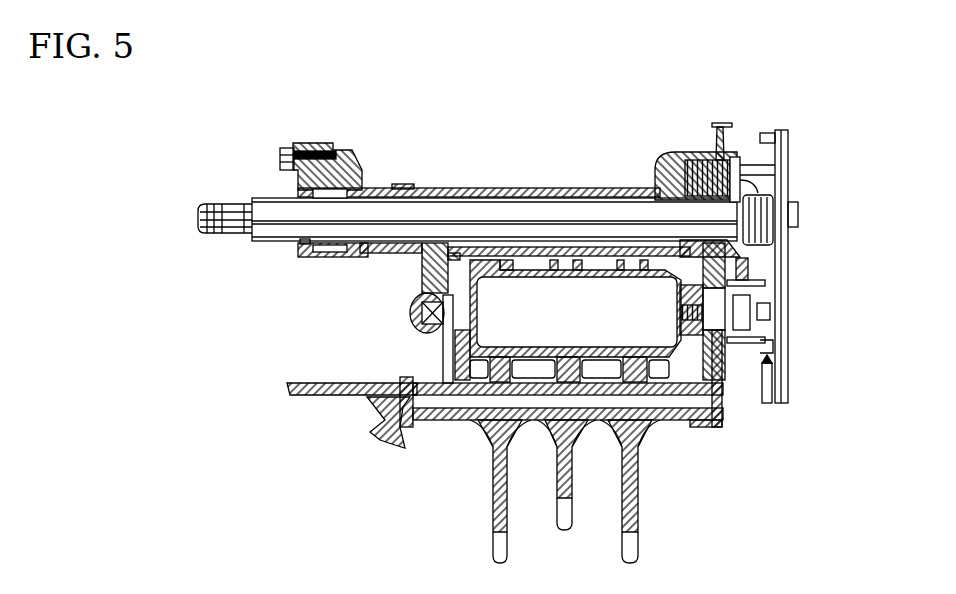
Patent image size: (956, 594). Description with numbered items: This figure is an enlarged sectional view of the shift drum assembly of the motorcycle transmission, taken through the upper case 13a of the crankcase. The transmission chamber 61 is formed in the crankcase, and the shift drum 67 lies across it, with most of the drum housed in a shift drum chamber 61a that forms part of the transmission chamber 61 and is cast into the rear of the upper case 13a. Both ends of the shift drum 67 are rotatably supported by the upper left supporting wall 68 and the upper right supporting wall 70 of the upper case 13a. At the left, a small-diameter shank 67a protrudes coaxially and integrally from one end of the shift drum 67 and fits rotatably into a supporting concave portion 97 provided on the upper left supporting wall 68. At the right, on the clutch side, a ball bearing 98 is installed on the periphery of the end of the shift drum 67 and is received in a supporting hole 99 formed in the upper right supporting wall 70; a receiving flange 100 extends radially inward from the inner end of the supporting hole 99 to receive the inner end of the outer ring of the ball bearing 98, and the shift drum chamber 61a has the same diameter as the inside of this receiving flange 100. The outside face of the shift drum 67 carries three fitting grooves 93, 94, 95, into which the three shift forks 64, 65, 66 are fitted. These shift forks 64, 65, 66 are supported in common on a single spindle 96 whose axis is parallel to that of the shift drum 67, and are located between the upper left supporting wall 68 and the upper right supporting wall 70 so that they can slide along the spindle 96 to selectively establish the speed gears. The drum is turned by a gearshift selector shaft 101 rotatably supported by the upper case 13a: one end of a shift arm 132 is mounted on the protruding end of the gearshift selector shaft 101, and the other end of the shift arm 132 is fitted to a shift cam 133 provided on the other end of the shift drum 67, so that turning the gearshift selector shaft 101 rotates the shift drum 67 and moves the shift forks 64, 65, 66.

The gearshift selector shaft 101 is at (546, 217).
The shift drum 67 is at (532, 262).
The small-diameter shank 67a is at (370, 268).
The transmission chamber 61 is at (594, 255).
The shift drum chamber 61a is at (647, 257).
The supporting hole 99 is at (725, 148).
The shift cam 133 is at (748, 265).
The shift arm 132 is at (768, 306).
The ball bearing 98 is at (763, 356).
The receiving flange 100 is at (723, 366).
The upper right supporting wall 70 is at (723, 378).
The fitting groove 93 is at (641, 258).
The fitting groove 94 is at (572, 260).
The fitting groove 95 is at (507, 265).
The upper left supporting wall 68 is at (433, 267).
The supporting concave portion 97 is at (427, 316).
The upper case 13a is at (438, 354).
The spindle 96 is at (455, 420).
The shift fork 66 is at (492, 503).
The shift fork 65 is at (568, 478).
The shift fork 64 is at (637, 478).